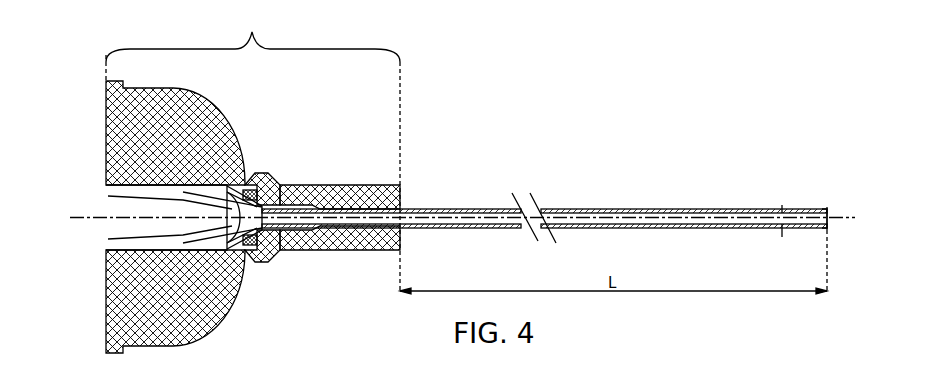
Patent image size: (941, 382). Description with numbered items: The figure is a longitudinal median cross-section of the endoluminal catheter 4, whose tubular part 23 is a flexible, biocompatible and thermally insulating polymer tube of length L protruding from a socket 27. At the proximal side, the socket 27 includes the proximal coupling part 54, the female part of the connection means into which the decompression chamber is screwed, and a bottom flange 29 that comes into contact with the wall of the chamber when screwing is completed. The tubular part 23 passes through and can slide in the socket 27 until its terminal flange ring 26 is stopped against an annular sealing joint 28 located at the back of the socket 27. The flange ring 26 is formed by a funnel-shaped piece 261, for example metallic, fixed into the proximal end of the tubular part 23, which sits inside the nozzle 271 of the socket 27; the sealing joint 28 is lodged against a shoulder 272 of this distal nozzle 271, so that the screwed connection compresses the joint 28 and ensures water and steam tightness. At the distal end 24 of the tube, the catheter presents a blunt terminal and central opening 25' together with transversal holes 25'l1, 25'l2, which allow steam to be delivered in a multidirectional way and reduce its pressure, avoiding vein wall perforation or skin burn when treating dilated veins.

The endoluminal catheter 4 is at (545, 186).
The proximal coupling part 54 is at (253, 35).
The tubular part 23 is at (616, 209).
The distal end 24 is at (829, 200).
The terminal and central opening 25' is at (861, 211).
The transversal hole 25'l1 is at (800, 176).
The transversal hole 25'l2 is at (797, 254).
The terminal flange ring 26 is at (250, 243).
The funnel-shaped piece 261 is at (130, 198).
The socket 27 is at (125, 141).
The nozzle 271 is at (372, 185).
The shoulder 272 is at (268, 183).
The annular sealing joint 28 is at (250, 190).
The bottom flange 29 is at (106, 277).